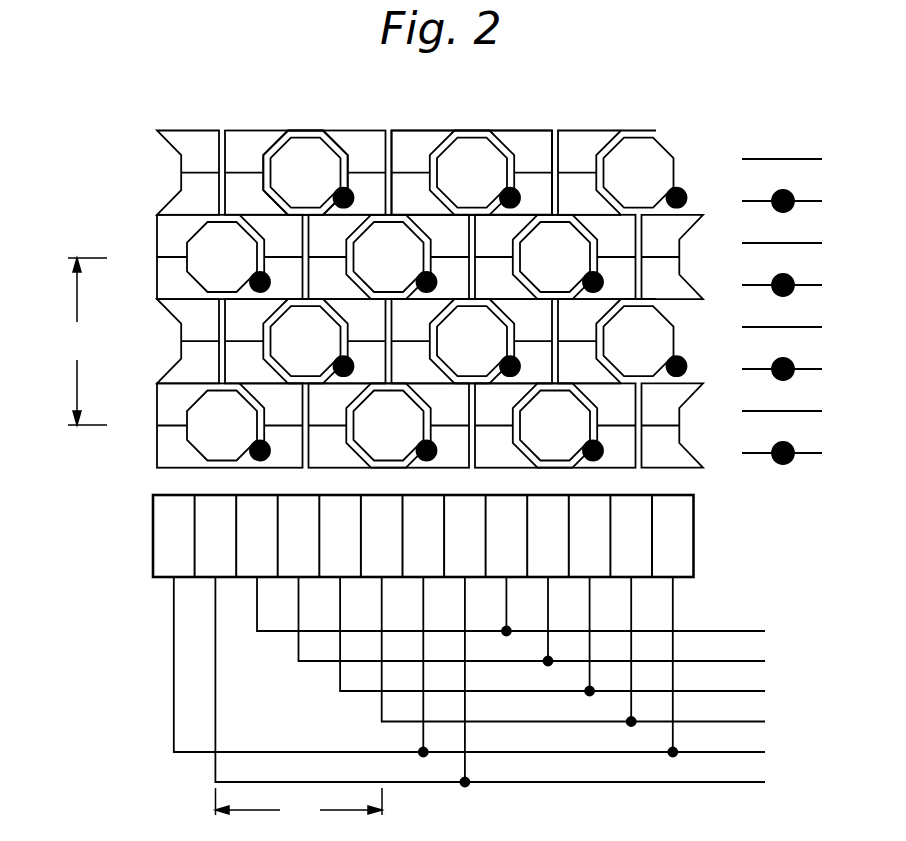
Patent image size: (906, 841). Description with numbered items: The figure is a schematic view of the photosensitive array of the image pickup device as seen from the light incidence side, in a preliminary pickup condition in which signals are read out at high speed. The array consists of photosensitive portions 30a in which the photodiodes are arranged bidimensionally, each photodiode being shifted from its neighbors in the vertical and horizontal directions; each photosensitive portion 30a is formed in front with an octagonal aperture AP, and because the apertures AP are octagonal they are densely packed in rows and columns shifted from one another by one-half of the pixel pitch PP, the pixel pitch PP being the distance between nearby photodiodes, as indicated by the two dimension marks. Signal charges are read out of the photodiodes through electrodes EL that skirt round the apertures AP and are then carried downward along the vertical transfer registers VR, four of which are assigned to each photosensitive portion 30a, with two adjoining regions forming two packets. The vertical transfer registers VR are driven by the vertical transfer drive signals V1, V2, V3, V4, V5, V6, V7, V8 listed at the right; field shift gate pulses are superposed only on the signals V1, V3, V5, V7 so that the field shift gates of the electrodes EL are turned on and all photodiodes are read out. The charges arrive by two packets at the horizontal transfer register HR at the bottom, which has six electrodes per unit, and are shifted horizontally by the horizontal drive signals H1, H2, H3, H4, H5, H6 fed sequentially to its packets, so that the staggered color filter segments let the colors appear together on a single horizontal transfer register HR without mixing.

The aperture AP is at (289, 150).
The vertical transfer register VR is at (405, 137).
The photosensitive portion 30a is at (533, 145).
The electrode EL is at (677, 195).
The vertical transfer drive signal V1 is at (802, 453).
The vertical transfer drive signal V2 is at (802, 411).
The vertical transfer drive signal V3 is at (802, 369).
The vertical transfer drive signal V4 is at (802, 327).
The vertical transfer drive signal V5 is at (802, 285).
The vertical transfer drive signal V6 is at (802, 243).
The vertical transfer drive signal V7 is at (802, 201).
The vertical transfer drive signal V8 is at (802, 159).
The horizontal transfer register HR is at (694, 547).
The horizontal drive signal H1 is at (531, 611).
The horizontal drive signal H2 is at (552, 626).
The horizontal drive signal H3 is at (573, 641).
The horizontal drive signal H4 is at (594, 657).
The horizontal drive signal H5 is at (490, 672).
The horizontal drive signal H6 is at (510, 687).
The pixel pitch PP is at (222, 541).